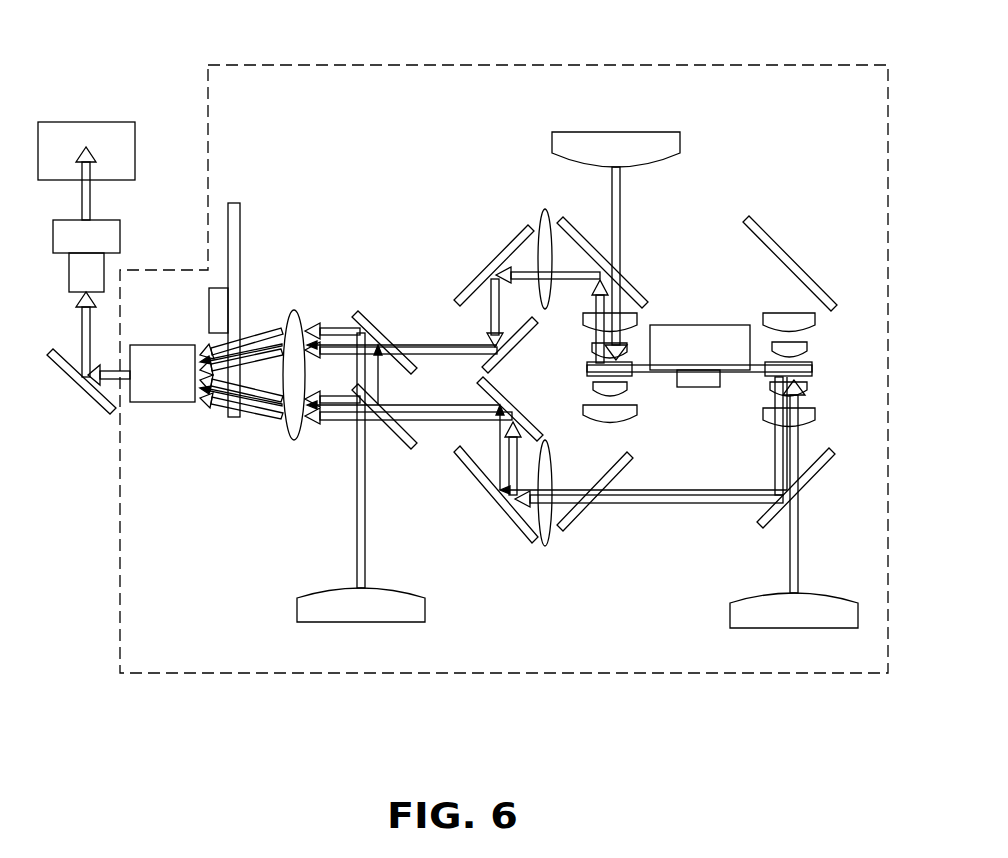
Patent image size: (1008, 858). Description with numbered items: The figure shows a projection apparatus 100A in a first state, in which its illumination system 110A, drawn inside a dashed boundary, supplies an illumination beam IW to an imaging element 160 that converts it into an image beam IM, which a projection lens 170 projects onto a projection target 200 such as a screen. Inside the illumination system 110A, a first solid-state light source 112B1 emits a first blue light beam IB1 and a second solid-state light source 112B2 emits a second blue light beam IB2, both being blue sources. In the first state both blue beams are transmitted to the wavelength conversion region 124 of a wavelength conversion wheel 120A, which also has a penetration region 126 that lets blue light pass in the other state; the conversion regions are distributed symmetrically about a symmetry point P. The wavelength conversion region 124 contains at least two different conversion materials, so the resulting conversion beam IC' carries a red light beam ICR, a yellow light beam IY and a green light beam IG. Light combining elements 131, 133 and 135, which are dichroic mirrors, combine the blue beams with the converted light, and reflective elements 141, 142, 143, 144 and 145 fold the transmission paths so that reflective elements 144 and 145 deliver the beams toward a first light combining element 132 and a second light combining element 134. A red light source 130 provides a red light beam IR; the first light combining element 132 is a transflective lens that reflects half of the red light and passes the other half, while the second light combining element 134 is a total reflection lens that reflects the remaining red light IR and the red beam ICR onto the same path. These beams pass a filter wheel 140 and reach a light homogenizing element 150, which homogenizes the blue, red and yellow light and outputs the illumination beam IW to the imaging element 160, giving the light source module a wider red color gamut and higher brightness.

The illumination system 110A is at (660, 63).
The projection apparatus 100A is at (890, 707).
The projection target 200 is at (105, 135).
The image beam IM is at (92, 205).
The projection lens 170 is at (110, 240).
The imaging element 160 is at (80, 383).
The light homogenizing element 150 is at (168, 397).
The illumination beam IW is at (128, 372).
The filter wheel 140 is at (238, 205).
The second light combining element 134 is at (365, 322).
The first light combining element 132 is at (395, 445).
The red light beam IR is at (356, 500).
The red light source 130 is at (418, 612).
The green light beam IG is at (420, 345).
The red light beam of the conversion beam ICR is at (683, 490).
The yellow light beam IY is at (672, 505).
The reflective element 142 is at (490, 248).
The reflective element 143 is at (490, 497).
The reflective element 144 is at (520, 340).
The reflective element 145 is at (510, 400).
The light combining element 135 is at (628, 455).
The light combining element 131 is at (628, 290).
The first blue light beam IB1 is at (625, 232).
The first solid-state light source 112B1 is at (665, 150).
The symmetry point P is at (696, 360).
The wavelength conversion wheel 120A is at (812, 372).
The wavelength conversion region 124 is at (810, 378).
The penetration region 126 is at (757, 348).
The reflective element 141 is at (787, 258).
The light combining element 133 is at (832, 452).
The second blue light beam IB2 is at (800, 535).
The second solid-state light source 112B2 is at (735, 617).
The conversion beam IC' is at (93, 740).